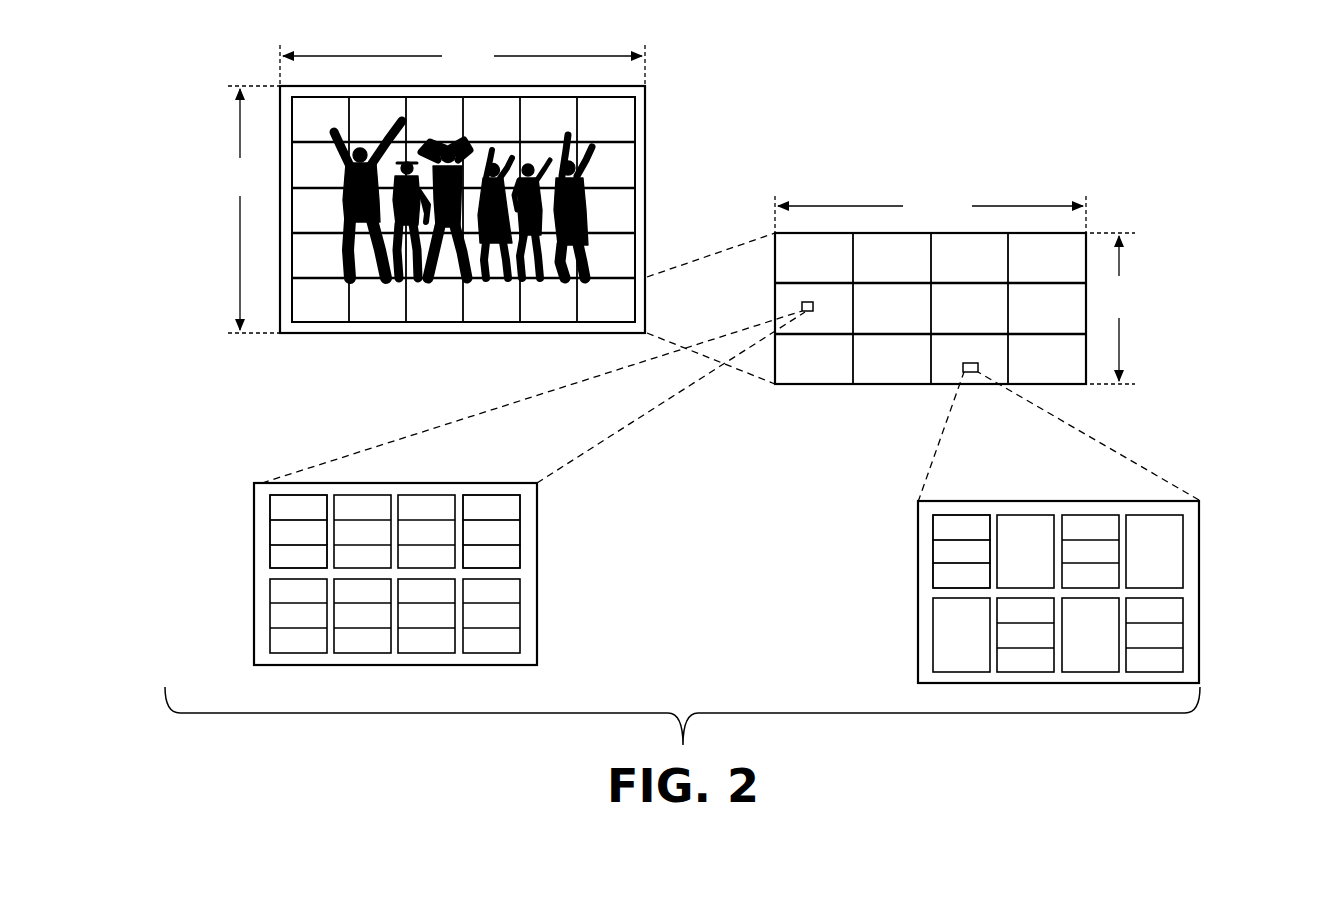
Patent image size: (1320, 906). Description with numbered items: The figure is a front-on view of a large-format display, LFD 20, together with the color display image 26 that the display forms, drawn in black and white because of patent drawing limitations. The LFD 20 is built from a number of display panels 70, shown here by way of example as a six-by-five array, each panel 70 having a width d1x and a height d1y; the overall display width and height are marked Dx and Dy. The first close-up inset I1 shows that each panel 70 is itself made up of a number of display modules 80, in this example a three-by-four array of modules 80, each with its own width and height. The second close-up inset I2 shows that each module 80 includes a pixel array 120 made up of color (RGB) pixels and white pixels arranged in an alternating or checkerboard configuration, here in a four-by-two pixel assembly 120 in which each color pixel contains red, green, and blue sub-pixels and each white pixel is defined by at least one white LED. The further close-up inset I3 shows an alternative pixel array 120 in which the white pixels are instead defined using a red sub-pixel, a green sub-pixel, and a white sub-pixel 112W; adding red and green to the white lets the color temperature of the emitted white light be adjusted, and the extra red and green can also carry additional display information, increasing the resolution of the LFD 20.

The large-format display (LFD) 20 is at (661, 198).
The color display image 26 is at (606, 175).
The display panel 70 is at (432, 303).
The display module 80 is at (885, 372).
The pixel array 120 is at (405, 484).
The white sub-pixel 112W is at (522, 551).
The first close-up inset I1 is at (1004, 309).
The second close-up inset I2 is at (1222, 585).
The close-up inset I3 is at (578, 618).